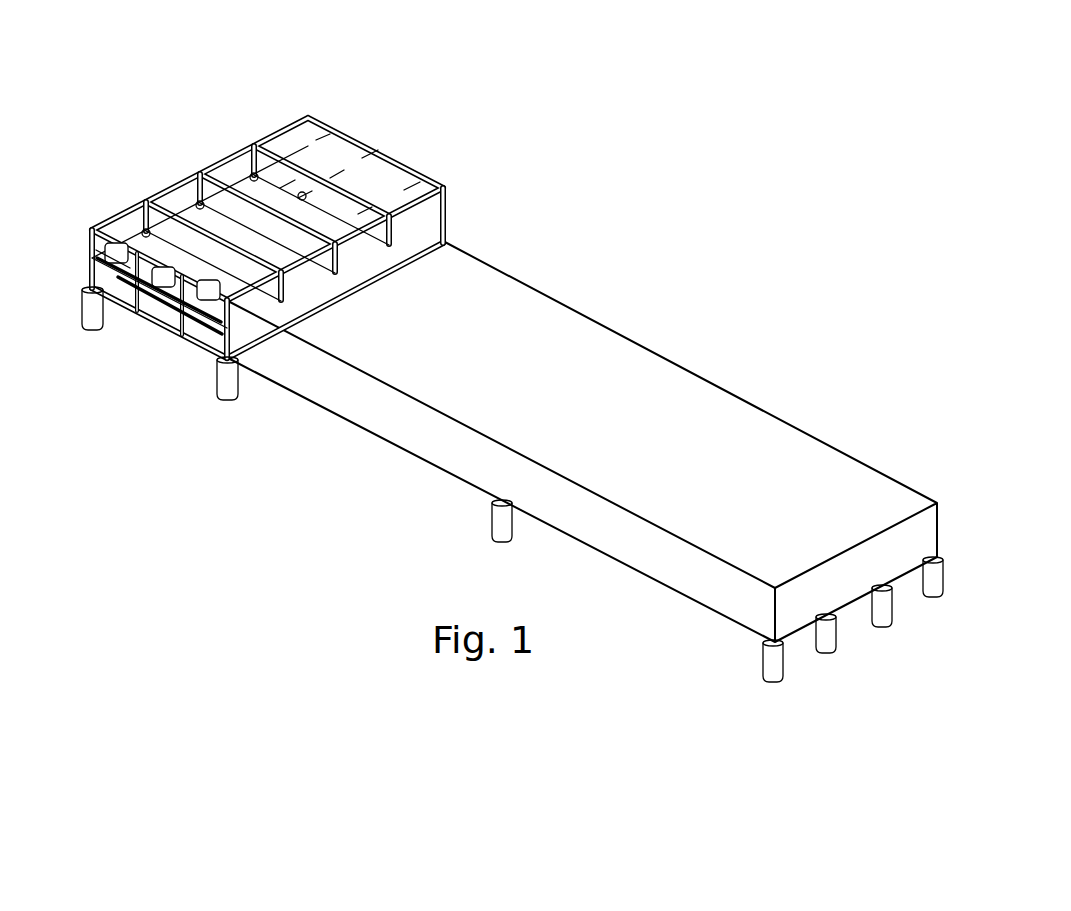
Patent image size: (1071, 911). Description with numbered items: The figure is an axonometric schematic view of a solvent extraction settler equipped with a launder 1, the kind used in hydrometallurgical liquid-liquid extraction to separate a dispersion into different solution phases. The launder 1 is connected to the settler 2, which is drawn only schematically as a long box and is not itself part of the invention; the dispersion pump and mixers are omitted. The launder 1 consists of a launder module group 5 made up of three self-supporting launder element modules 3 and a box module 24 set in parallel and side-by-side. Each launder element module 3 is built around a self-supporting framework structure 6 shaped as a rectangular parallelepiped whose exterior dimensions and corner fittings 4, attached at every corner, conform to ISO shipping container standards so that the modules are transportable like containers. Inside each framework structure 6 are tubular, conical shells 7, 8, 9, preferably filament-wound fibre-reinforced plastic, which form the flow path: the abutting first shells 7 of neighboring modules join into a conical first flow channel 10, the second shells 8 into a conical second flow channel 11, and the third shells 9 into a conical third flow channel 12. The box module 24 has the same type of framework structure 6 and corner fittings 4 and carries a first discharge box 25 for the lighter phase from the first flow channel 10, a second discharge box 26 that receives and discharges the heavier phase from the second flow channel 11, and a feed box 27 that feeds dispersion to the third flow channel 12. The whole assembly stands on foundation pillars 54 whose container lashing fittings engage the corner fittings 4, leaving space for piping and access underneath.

The launder 1 is at (259, 78).
The settler 2 is at (618, 298).
The launder element module 3 is at (170, 261).
The corner fittings 4 is at (257, 146).
The launder module group 5 is at (90, 228).
The framework structure 6 is at (250, 170).
The first shell 7 is at (212, 308).
The second shell 8 is at (170, 288).
The third shell 9 is at (93, 251).
The first flow channel 10 is at (362, 213).
The second flow channel 11 is at (305, 198).
The third flow channel 12 is at (272, 190).
The box module 24 is at (333, 175).
The compartment 25 is at (410, 188).
The second discharge box 26 is at (368, 164).
The feed box 27 is at (318, 142).
The pillars 54 is at (95, 320).